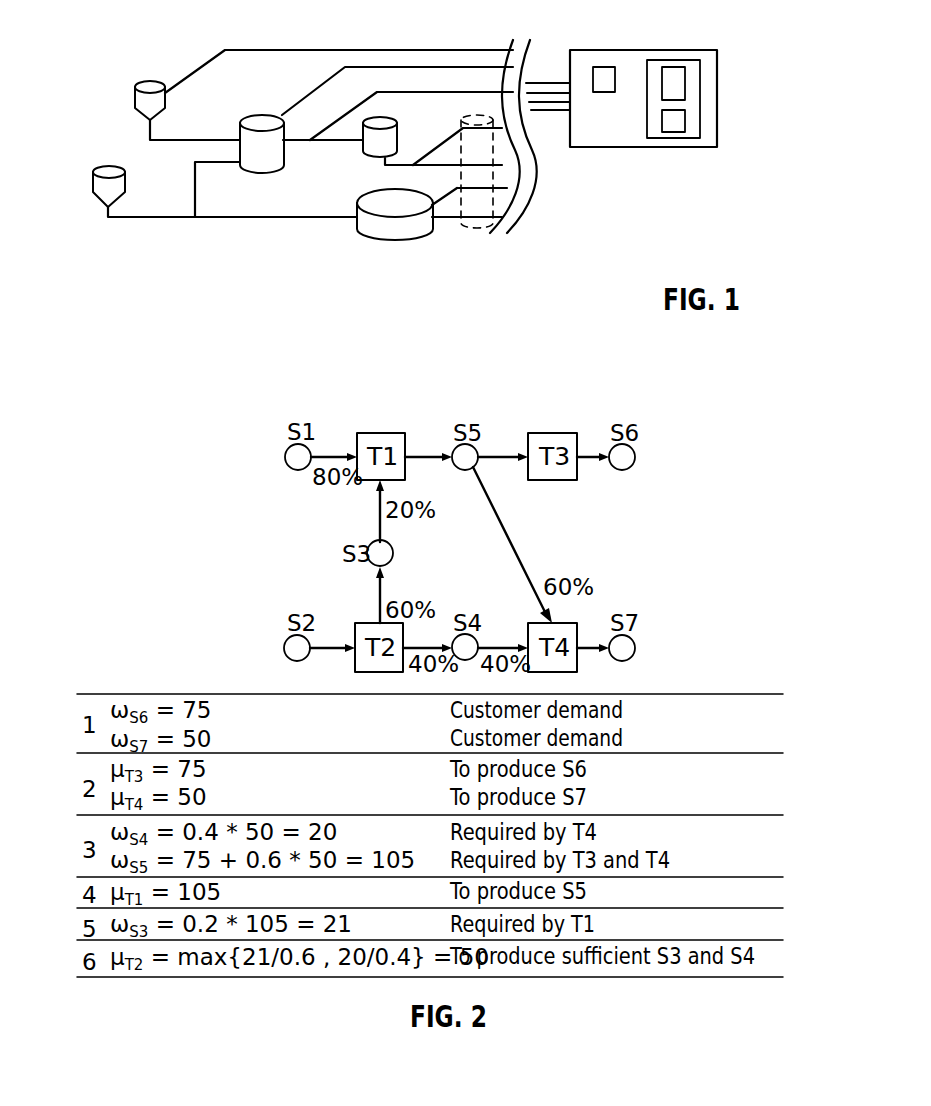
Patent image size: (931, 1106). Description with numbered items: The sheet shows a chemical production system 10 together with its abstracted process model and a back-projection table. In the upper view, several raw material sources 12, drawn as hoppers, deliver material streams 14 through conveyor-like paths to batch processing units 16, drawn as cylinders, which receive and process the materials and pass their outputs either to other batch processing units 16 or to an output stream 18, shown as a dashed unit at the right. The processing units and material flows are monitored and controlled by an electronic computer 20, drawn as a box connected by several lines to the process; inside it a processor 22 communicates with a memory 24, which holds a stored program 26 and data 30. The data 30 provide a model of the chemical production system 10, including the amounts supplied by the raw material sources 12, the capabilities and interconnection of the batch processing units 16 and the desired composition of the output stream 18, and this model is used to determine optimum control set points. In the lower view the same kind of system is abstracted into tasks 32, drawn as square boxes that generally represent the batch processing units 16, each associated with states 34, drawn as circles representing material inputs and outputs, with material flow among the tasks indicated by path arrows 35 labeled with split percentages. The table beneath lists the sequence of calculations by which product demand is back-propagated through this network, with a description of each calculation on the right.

In FIG. 1, the chemical production system 10 is at (75, 52).
In FIG. 1, the raw material sources 12 is at (135, 93).
In FIG. 1, the material streams 14 is at (160, 142).
In FIG. 1, the batch processing units 16 is at (370, 158).
In FIG. 1, the output stream 18 is at (477, 229).
In FIG. 1, the electronic computer 20 is at (717, 50).
In FIG. 1, the processor 22 is at (612, 72).
In FIG. 1, the memory 24 is at (700, 100).
In FIG. 1, the stored program 26 is at (675, 83).
In FIG. 1, the data 30 is at (683, 125).
In FIG. 2, the tasks 32 is at (405, 440).
In FIG. 2, the states 34 is at (368, 567).
In FIG. 2, the path arrows 35 is at (538, 592).